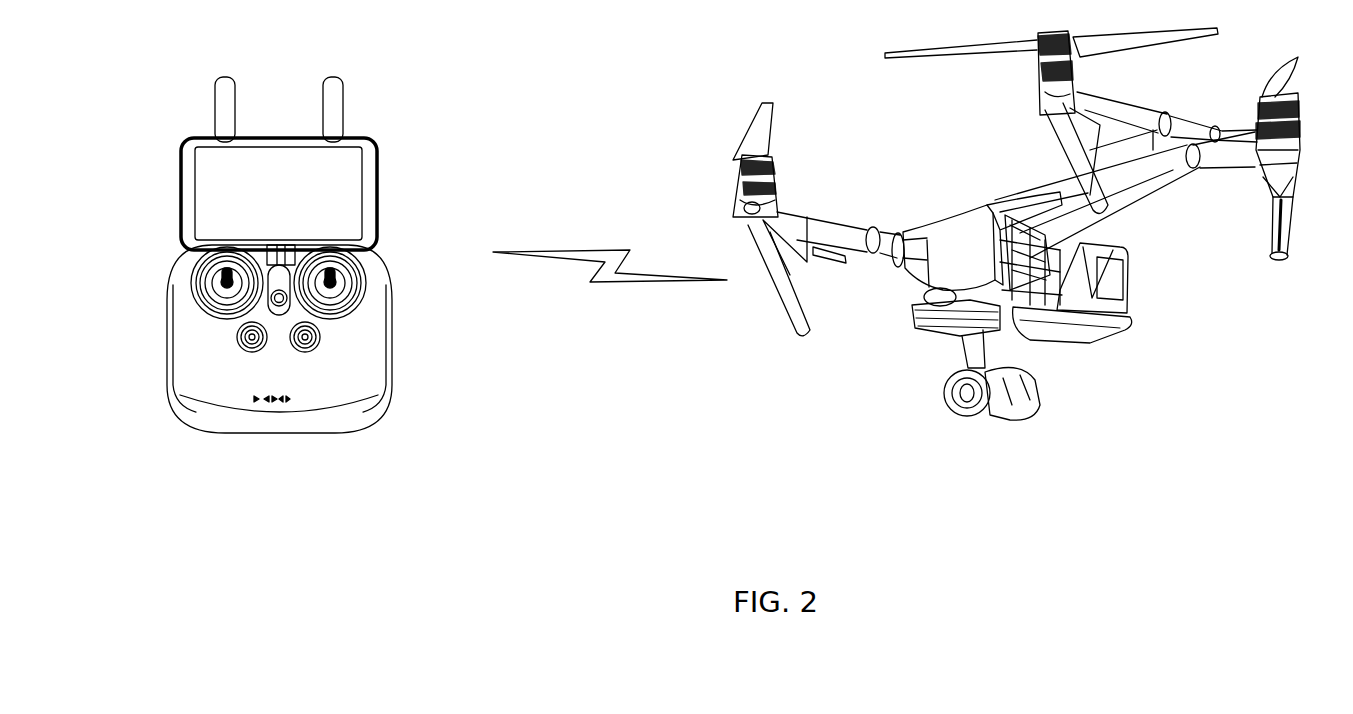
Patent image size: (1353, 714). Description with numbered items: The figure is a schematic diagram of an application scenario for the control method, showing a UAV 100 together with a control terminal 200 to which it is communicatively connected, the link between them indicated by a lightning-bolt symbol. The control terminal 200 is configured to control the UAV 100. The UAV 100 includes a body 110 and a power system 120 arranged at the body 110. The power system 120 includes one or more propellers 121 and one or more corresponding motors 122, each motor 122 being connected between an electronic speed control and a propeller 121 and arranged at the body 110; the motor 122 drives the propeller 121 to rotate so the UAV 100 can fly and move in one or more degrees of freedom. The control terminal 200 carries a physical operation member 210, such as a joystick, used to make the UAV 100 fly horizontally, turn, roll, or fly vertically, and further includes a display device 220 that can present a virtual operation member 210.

The UAV 100 is at (797, 55).
The body 110 is at (986, 203).
The power system 120 is at (685, 160).
The propeller 121 is at (762, 120).
The motor 122 is at (745, 173).
The control terminal 200 is at (363, 255).
The operation member 210 is at (386, 326).
The display device 220 is at (351, 165).